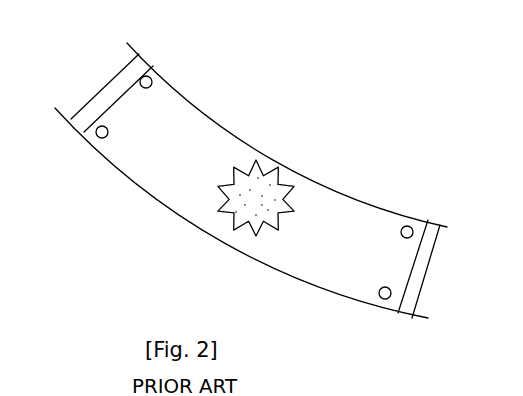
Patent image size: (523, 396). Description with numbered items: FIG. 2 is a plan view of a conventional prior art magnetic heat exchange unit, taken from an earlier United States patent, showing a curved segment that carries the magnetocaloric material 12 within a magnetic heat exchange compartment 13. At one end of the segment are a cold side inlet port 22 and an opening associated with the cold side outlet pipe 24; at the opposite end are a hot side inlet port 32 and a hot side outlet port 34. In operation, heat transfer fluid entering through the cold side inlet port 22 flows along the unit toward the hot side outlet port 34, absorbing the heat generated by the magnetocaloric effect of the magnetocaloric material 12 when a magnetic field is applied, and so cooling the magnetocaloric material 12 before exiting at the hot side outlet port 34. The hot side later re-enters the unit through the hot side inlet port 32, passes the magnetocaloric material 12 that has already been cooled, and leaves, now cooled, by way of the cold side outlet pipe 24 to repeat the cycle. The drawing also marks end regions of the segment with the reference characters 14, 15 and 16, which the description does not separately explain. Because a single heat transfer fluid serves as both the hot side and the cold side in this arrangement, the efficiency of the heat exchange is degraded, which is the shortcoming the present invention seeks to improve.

The magnetocaloric material 12 is at (293, 188).
The magnetic heat exchange compartment 13 is at (168, 158).
The end edge 14 is at (87, 103).
The end strip 15 is at (130, 113).
The end strip 16 is at (398, 265).
The cold side inlet port 22 is at (97, 136).
The cold side outlet pipe 24 is at (152, 82).
The hot side inlet port 32 is at (383, 300).
The hot side outlet port 34 is at (412, 231).